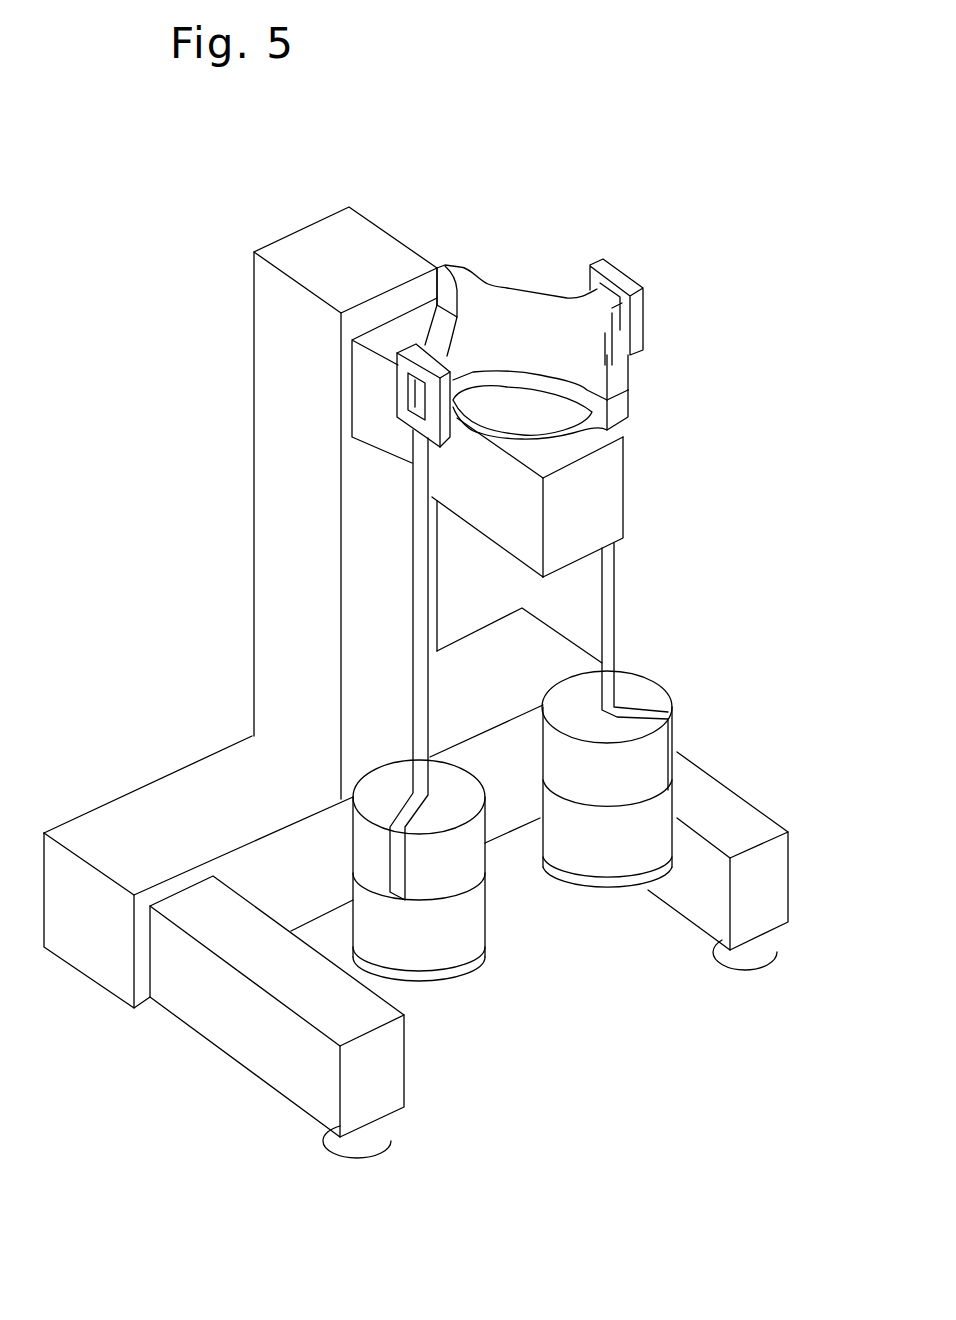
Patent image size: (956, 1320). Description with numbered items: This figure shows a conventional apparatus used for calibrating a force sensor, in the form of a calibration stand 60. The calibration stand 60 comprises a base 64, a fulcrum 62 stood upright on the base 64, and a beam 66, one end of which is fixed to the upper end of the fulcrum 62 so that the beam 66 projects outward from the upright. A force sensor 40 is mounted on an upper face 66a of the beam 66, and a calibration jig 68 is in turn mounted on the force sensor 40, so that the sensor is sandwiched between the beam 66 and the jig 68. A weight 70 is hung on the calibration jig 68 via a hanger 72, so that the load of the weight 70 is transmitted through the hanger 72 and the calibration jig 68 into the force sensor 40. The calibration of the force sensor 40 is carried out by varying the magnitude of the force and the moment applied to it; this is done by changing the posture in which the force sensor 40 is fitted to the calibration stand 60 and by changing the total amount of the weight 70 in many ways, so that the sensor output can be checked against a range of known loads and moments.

The calibration stand 60 is at (430, 162).
The fulcrum 62 is at (275, 352).
The base 64 is at (176, 802).
The beam 66 is at (562, 452).
The upper face 66a is at (628, 490).
The calibration jig 68 is at (505, 288).
The force sensor 40 is at (513, 410).
The weight 70 is at (600, 790).
The hanger 72 is at (423, 585).